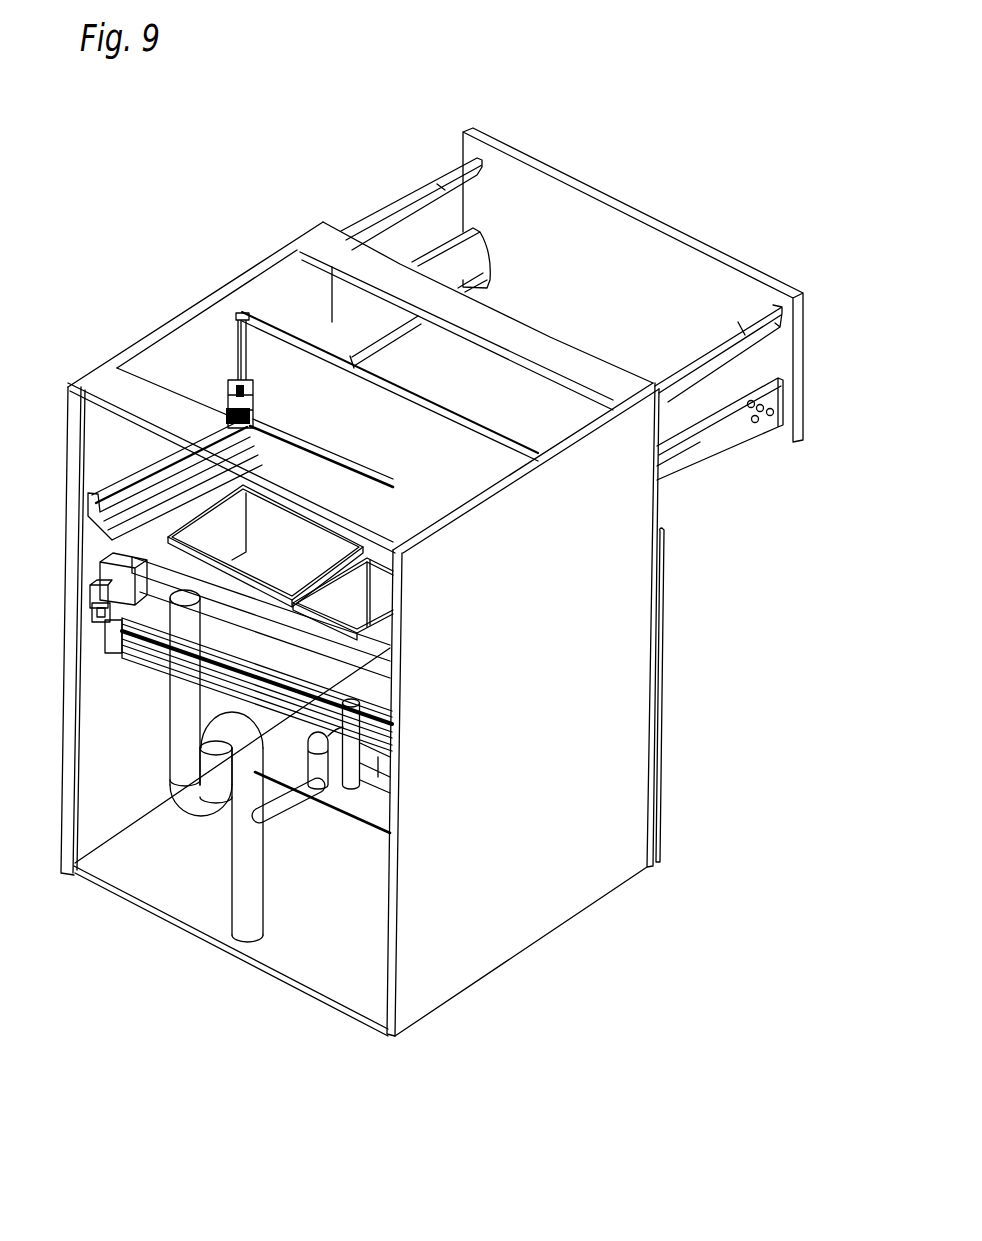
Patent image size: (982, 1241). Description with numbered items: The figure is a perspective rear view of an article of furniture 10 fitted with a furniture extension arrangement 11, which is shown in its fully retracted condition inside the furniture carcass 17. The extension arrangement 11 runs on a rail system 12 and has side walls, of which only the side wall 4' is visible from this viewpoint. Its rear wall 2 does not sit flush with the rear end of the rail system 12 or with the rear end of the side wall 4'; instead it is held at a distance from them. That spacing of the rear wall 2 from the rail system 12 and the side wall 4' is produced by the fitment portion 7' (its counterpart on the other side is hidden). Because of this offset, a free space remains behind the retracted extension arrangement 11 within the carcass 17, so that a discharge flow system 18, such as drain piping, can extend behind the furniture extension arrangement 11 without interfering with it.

The article of furniture 10 is at (367, 208).
The furniture extension arrangement 11 is at (668, 613).
The furniture carcass 17 is at (530, 741).
The rear wall 2 is at (325, 657).
The discharge flow system 18 is at (245, 878).
The fitment portion 7' is at (87, 572).
The side wall 4' is at (57, 602).
The rail system 12 is at (110, 612).